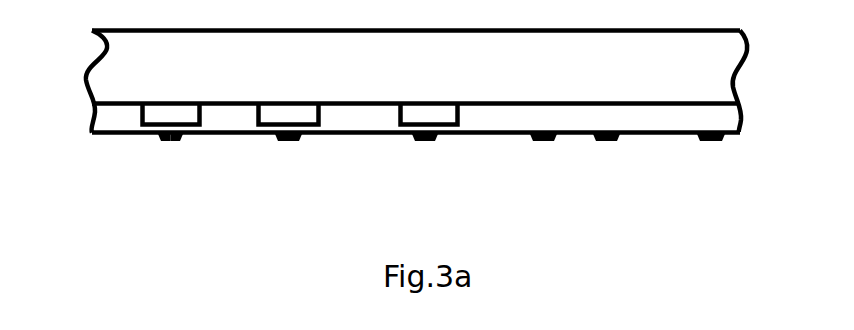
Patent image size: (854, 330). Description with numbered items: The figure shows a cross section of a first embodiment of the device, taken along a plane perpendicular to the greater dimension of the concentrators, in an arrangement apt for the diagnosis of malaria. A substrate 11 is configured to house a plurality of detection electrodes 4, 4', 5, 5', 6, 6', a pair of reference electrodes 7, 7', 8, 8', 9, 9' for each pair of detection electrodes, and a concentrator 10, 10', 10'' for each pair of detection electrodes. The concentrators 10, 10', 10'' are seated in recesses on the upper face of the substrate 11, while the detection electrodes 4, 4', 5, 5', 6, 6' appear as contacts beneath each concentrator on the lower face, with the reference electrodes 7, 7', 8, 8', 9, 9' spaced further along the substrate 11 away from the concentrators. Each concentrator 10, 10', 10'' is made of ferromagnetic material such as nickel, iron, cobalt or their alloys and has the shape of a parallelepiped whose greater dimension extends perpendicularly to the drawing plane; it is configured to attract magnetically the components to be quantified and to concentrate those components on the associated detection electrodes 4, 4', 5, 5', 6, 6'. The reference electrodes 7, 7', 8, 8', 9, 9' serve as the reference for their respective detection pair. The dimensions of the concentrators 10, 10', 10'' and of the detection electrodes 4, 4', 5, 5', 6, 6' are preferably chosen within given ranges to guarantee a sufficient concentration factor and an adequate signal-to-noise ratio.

The detection electrode 4 is at (153, 171).
The detection electrode 4' is at (194, 171).
The detection electrode 5 is at (273, 171).
The detection electrode 5' is at (313, 171).
The detection electrode 6 is at (410, 171).
The detection electrode 6' is at (450, 171).
The reference electrode 7 is at (529, 171).
The reference electrode 7' is at (561, 171).
The reference electrode 8 is at (600, 174).
The reference electrode 8' is at (631, 171).
The reference electrode 9 is at (694, 171).
The reference electrode 9' is at (734, 171).
The concentrator 10 is at (171, 87).
The concentrator 10' is at (289, 87).
The concentrator 10'' is at (432, 87).
The substrate 11 is at (101, 78).